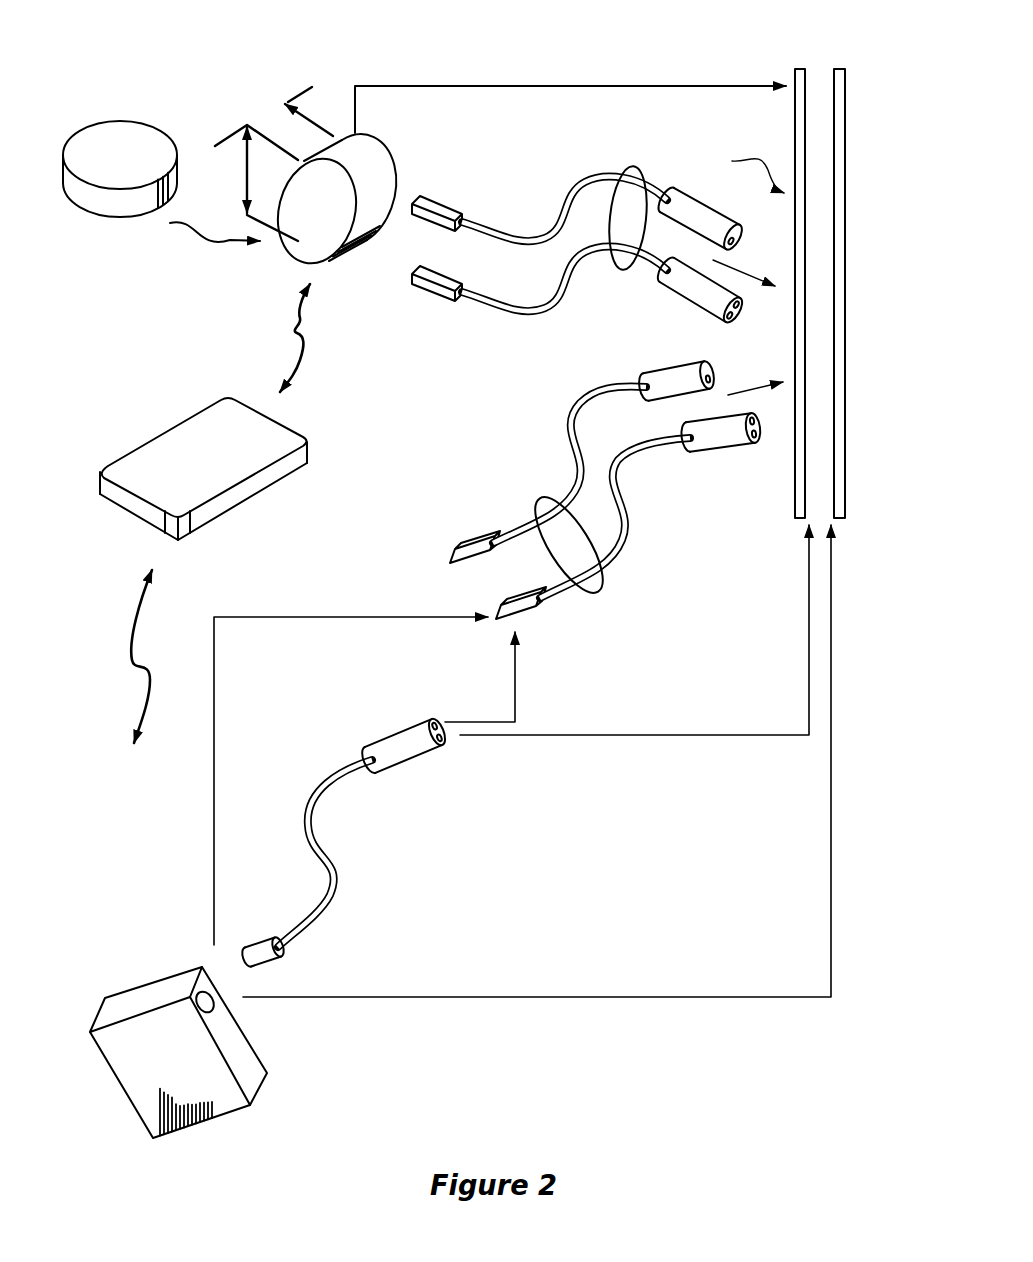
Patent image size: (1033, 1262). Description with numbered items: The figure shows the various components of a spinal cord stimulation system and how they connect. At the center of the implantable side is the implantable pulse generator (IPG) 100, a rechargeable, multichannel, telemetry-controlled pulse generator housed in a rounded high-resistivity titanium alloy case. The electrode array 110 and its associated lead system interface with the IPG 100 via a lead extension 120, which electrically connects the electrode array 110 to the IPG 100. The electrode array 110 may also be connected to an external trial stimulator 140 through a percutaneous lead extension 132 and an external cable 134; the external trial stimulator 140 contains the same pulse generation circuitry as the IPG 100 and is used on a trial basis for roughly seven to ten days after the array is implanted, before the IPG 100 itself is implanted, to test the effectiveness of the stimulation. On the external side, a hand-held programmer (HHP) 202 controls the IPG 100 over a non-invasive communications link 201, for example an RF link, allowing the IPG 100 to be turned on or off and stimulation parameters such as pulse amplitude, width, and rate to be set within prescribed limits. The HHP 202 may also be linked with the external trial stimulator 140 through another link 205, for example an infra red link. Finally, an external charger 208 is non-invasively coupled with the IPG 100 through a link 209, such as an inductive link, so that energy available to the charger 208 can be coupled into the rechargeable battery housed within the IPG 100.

The implantable pulse generator (IPG) 100 is at (372, 154).
The electrode array 110 is at (816, 76).
The lead extension 120 is at (630, 165).
The percutaneous lead extension 132 is at (550, 512).
The external cable 134 is at (337, 775).
The external trial stimulator 140 is at (145, 997).
The communications link 201 is at (305, 330).
The hand-held programmer (HHP) 202 is at (180, 433).
The link 205 is at (136, 608).
The external charger 208 is at (118, 130).
The link 209 is at (200, 237).